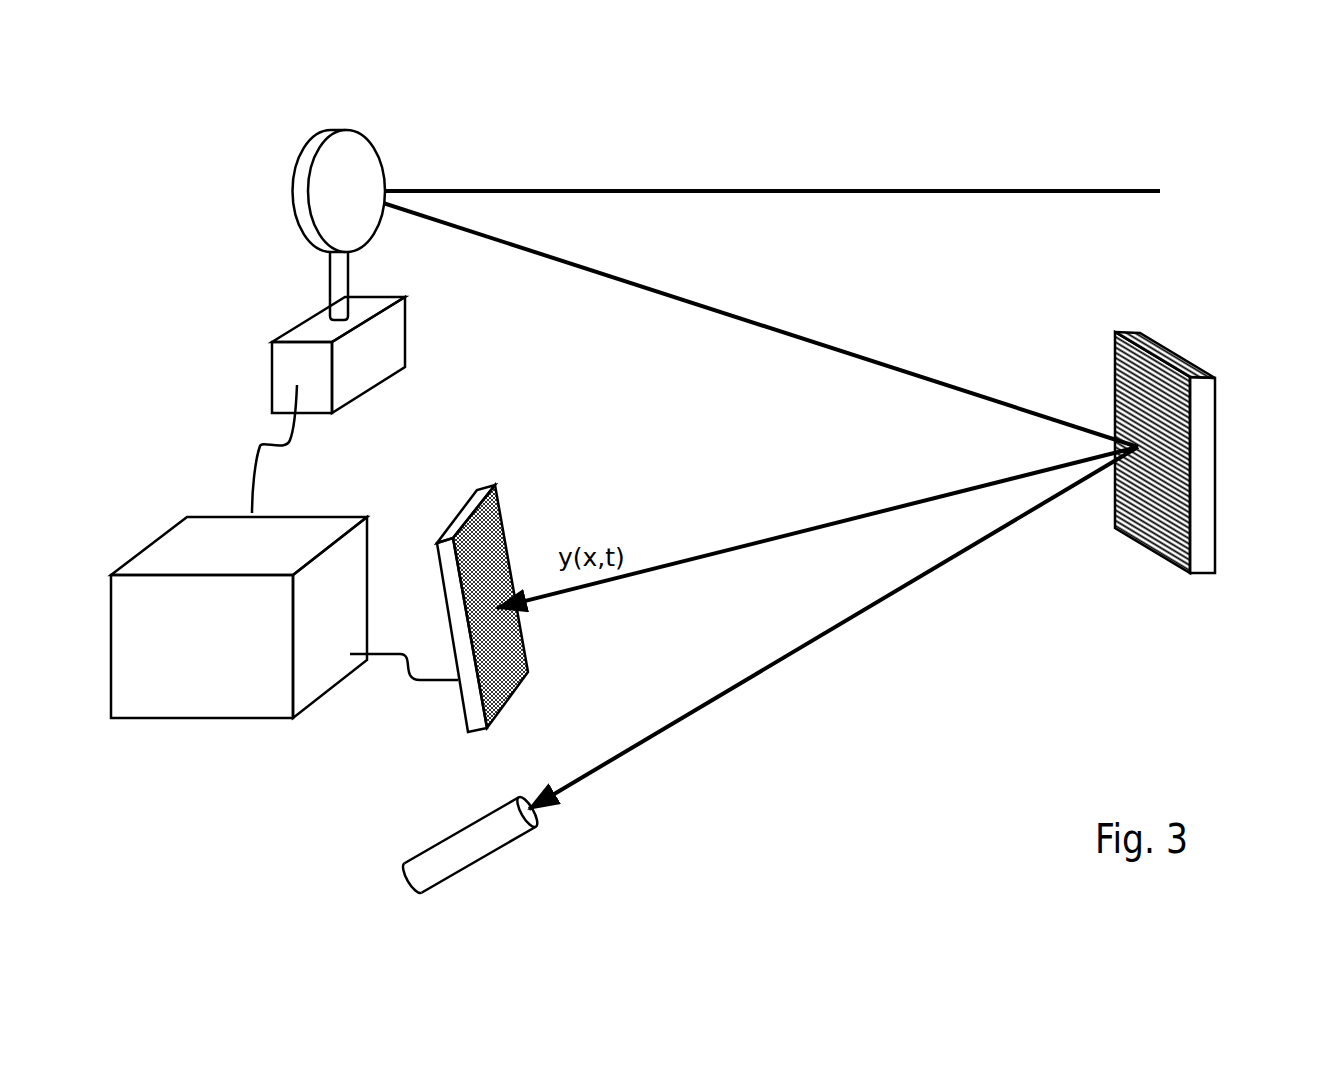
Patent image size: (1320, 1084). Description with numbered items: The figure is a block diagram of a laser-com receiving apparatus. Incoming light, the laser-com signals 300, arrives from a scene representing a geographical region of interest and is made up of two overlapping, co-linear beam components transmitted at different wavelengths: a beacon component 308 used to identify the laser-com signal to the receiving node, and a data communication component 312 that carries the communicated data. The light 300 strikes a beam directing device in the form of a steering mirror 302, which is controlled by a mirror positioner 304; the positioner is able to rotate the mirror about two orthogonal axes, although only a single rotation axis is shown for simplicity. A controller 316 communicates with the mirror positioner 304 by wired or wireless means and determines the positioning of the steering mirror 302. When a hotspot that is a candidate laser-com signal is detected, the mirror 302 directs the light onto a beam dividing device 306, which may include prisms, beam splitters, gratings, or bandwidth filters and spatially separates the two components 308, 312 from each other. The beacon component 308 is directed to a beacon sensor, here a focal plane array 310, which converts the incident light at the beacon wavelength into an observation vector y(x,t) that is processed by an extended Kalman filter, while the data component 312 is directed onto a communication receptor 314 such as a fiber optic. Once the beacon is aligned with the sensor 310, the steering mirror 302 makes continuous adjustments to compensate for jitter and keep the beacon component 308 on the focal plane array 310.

The laser-com signals 300 is at (873, 191).
The steering mirror 302 is at (370, 137).
The mirror positioner 304 is at (270, 382).
The beam dividing device 306 is at (1217, 473).
The beacon component 308 is at (770, 540).
The focal plane array 310 is at (465, 717).
The data communication beam component 312 is at (743, 683).
The communication receptor 314 is at (470, 823).
The controller 316 is at (170, 660).